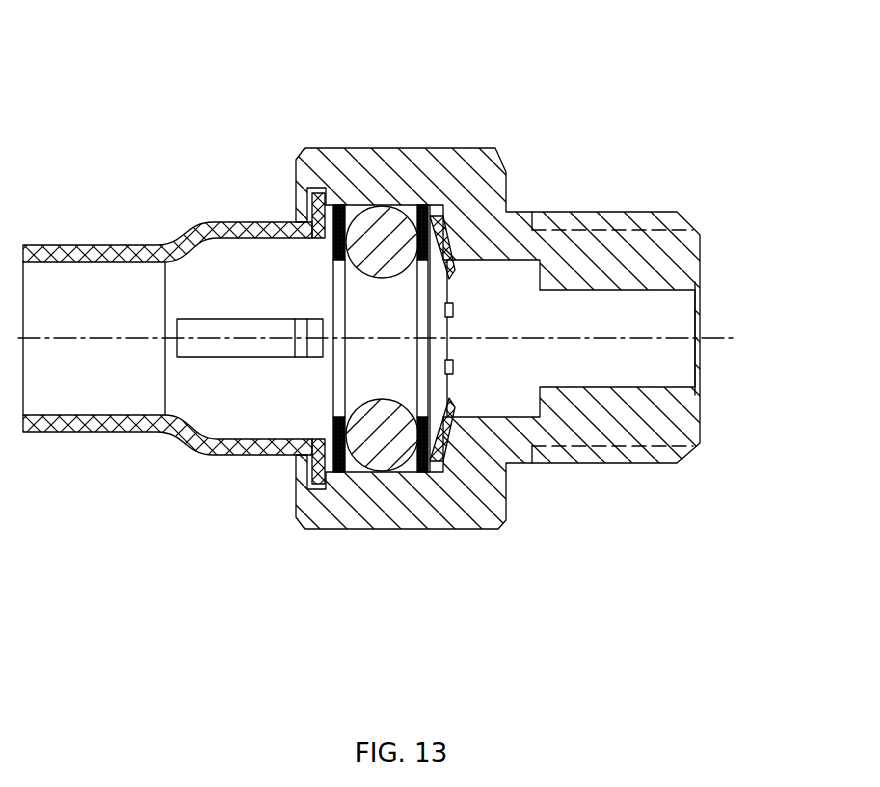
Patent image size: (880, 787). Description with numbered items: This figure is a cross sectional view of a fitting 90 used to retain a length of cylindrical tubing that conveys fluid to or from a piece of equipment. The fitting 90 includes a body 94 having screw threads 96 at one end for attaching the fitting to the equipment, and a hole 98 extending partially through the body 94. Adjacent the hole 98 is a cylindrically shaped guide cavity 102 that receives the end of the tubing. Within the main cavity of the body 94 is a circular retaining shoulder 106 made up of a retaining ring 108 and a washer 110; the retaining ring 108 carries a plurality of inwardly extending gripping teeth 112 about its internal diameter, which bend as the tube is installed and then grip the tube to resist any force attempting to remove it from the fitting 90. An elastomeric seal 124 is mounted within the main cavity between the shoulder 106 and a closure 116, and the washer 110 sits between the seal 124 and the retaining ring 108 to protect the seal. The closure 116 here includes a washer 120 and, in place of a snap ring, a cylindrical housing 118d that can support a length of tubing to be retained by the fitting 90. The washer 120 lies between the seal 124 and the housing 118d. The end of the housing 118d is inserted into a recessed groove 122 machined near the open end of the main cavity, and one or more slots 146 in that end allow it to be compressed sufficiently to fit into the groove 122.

The fitting 90 is at (406, 723).
The body 94 is at (518, 467).
The screw threads 96 is at (655, 212).
The hole 98 is at (670, 370).
The guide cavity 102 is at (500, 380).
The retaining shoulder 106 is at (433, 467).
The retaining ring 108 is at (438, 207).
The washer 110 is at (421, 205).
The gripping teeth 112 is at (450, 266).
The closure 116 is at (337, 473).
The cylindrical housing 118d is at (180, 233).
The washer 120 is at (322, 195).
The recessed groove 122 is at (313, 192).
The elastomeric seal 124 is at (381, 212).
The slots 146 is at (235, 347).